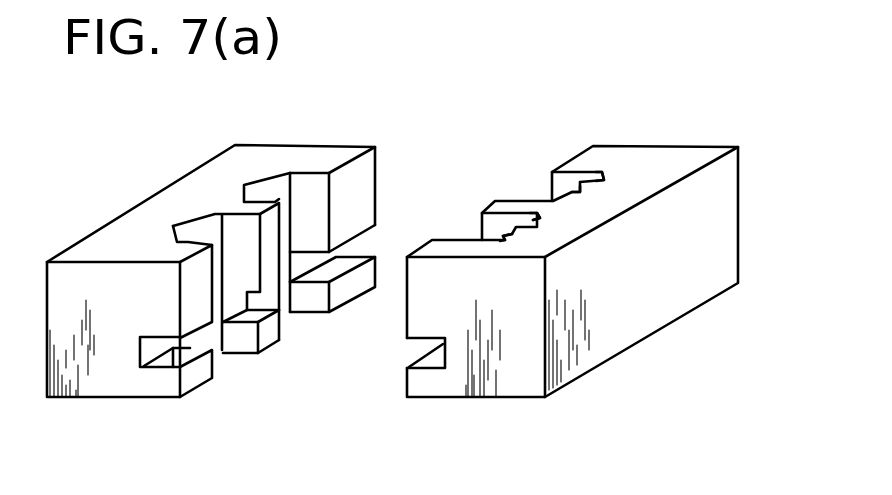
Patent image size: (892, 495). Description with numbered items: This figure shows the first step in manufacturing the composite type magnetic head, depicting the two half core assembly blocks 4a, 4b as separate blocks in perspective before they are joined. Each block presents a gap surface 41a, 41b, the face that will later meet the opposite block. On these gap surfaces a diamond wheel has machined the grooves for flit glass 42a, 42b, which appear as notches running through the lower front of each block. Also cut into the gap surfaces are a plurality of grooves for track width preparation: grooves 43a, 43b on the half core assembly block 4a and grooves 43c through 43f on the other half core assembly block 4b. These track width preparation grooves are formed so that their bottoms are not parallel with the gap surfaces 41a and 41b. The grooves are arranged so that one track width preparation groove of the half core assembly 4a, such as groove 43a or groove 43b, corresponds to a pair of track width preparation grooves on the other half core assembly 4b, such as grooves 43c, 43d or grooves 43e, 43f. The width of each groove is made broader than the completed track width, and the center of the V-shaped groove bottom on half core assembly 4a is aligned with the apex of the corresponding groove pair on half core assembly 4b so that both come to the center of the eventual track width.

The half core assembly block 4a is at (242, 276).
The half core assembly block 4b is at (554, 265).
The gap surface 41a is at (365, 192).
The gap surface 41b is at (577, 150).
The groove for flit glass 42a is at (170, 376).
The groove for flit glass 42b is at (432, 370).
The groove for track width preparation 43a is at (187, 242).
The groove for track width preparation 43b is at (257, 193).
The groove for track width preparation 43c is at (503, 238).
The groove for track width preparation 43d is at (538, 216).
The groove for track width preparation 43e is at (580, 190).
The groove for track width preparation 43f is at (603, 176).